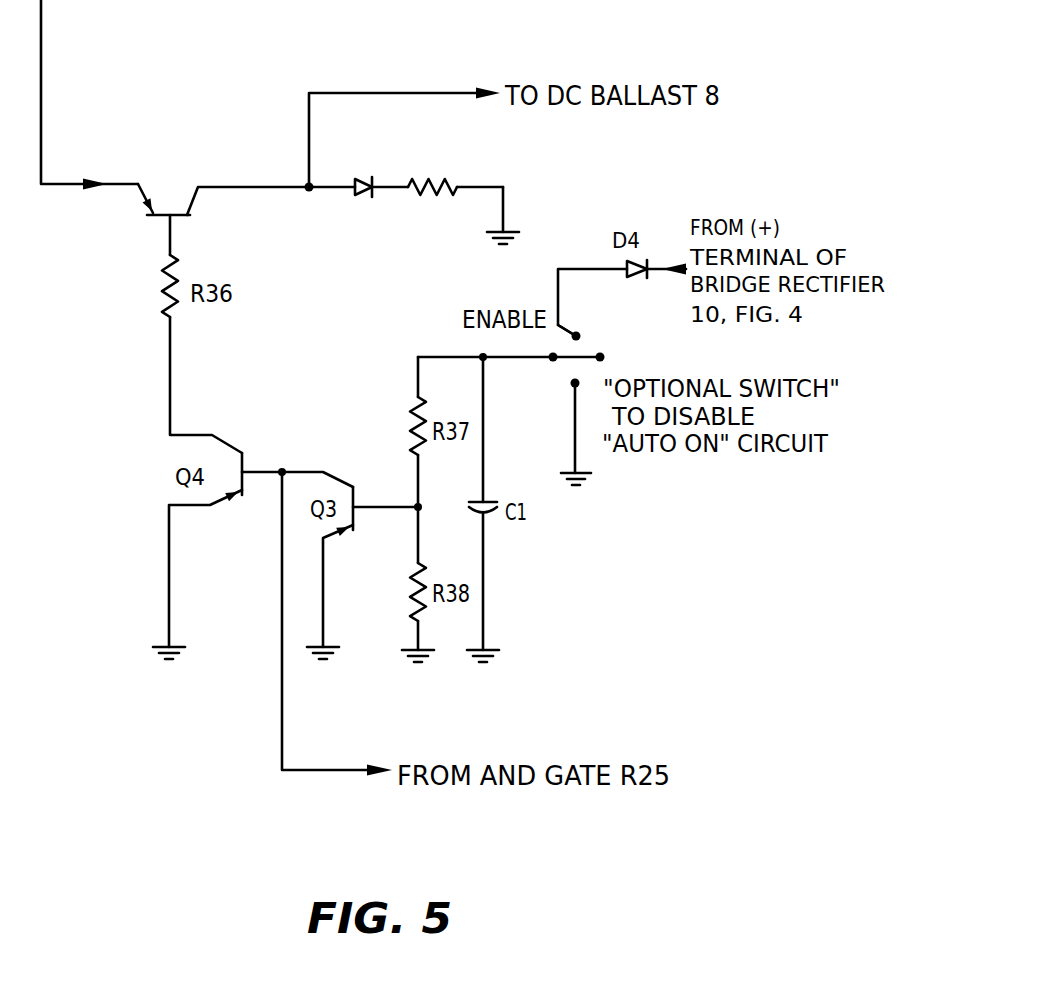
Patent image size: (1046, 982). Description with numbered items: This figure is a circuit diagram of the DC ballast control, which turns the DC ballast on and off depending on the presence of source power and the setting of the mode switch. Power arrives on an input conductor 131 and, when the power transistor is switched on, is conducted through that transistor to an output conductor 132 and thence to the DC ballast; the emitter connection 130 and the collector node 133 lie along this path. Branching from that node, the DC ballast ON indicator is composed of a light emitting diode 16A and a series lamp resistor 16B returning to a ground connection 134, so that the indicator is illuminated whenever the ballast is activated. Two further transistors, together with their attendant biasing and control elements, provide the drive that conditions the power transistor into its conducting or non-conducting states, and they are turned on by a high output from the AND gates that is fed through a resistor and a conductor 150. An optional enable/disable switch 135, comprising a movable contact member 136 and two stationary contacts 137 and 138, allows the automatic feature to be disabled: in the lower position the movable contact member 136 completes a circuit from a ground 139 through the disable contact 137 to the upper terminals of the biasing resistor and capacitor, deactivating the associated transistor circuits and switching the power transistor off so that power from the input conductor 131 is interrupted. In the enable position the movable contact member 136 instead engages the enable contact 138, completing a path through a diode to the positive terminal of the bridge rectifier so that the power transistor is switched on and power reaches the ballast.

The conductor 131 is at (41, 84).
The emitter connection of transistor Q5 130 is at (145, 194).
The conductor 132 is at (309, 134).
The junction node at collector of Q5 133 is at (333, 193).
The light emitting diode DL5 16A is at (370, 178).
The resistor RL5 16B is at (431, 198).
The ground connection 134 is at (509, 214).
The stationary contact 138 is at (578, 331).
The optional enable/disable switch 135 is at (593, 346).
The movable contact member 136 is at (585, 357).
The stationary contact 137 is at (575, 383).
The ground 139 is at (590, 476).
The conductor 150 is at (282, 720).